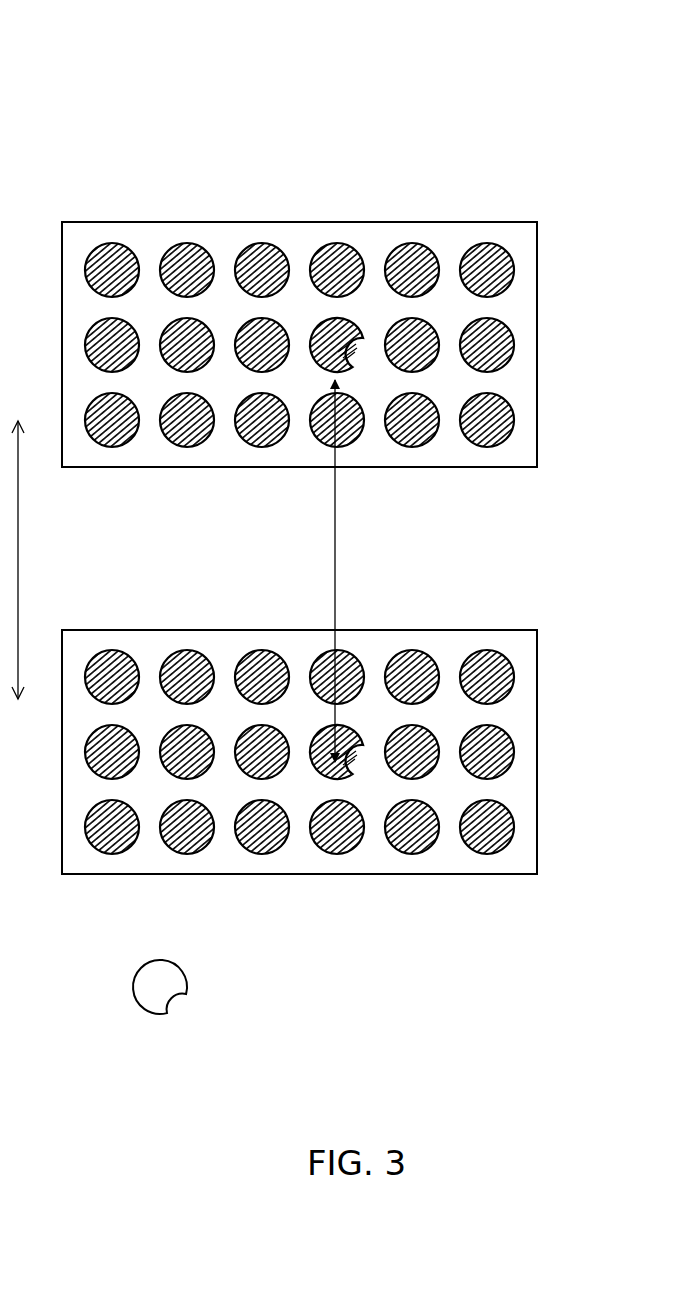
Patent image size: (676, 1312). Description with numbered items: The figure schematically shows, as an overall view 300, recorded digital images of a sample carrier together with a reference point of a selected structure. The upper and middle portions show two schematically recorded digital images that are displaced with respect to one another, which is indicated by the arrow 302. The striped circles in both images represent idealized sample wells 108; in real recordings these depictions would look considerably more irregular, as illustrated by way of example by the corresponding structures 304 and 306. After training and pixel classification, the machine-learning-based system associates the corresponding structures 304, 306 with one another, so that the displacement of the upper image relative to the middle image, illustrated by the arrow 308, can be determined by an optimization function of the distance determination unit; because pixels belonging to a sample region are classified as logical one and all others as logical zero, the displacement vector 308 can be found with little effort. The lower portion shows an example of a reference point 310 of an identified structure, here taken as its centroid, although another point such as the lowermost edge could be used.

The defect detection comparison diagram 300 is at (130, 64).
The sample wells 108 is at (247, 239).
The arrow 302 is at (27, 560).
The corresponding structure 304 is at (356, 310).
The corresponding structure 306 is at (358, 724).
The displacement vector 308 is at (350, 562).
The reference point 310 is at (150, 987).